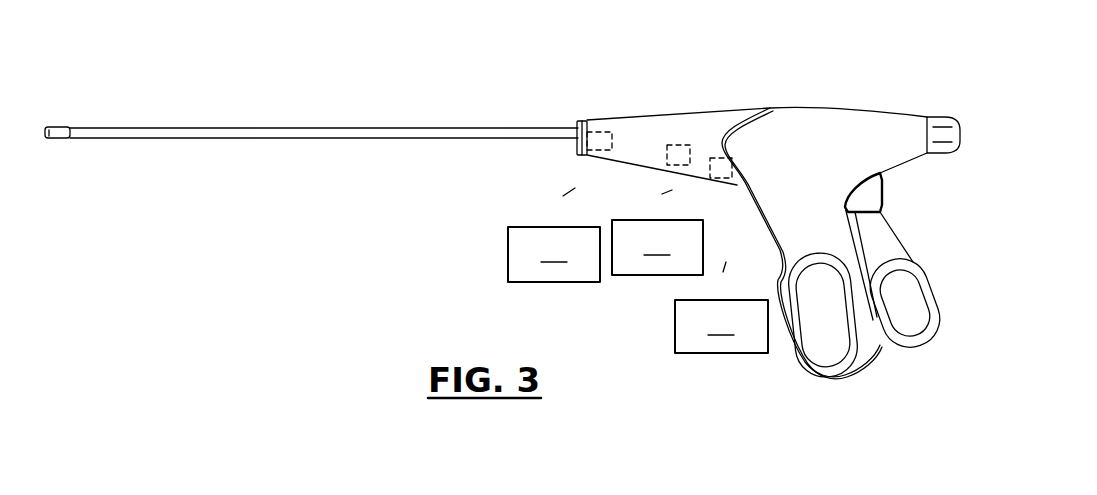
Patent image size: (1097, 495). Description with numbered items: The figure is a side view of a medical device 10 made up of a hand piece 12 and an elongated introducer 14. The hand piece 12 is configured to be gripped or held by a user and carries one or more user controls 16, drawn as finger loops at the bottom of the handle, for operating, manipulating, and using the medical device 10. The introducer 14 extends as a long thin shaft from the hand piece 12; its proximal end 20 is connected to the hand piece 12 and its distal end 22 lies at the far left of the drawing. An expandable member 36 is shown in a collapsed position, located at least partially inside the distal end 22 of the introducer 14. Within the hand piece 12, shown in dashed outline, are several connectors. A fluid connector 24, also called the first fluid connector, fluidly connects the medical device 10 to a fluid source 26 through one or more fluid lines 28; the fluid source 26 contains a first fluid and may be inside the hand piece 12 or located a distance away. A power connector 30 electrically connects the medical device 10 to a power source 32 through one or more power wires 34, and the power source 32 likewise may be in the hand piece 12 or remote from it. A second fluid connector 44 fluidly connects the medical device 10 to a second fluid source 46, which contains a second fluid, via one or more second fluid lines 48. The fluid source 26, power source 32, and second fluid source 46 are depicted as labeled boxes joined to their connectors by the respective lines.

The medical device 10 is at (284, 58).
The hand piece 12 is at (703, 127).
The introducer 14 is at (372, 130).
The user controls 16 is at (935, 154).
The proximal end 20 is at (565, 122).
The distal end 22 is at (53, 134).
The fluid connector 24 is at (604, 131).
The fluid source 26 is at (557, 227).
The fluid lines 28 is at (563, 196).
The power connector 30 is at (742, 150).
The power source 32 is at (717, 300).
The power wires 34 is at (723, 272).
The expandable member 36 is at (58, 149).
The second fluid connector 44 is at (670, 145).
The second fluid source 46 is at (690, 165).
The second fluid lines 48 is at (662, 194).